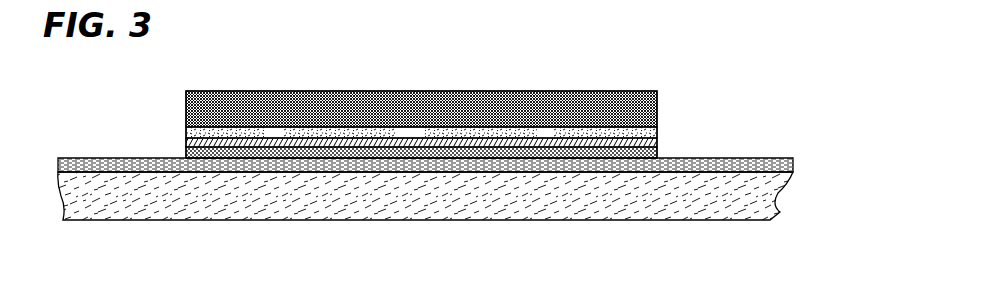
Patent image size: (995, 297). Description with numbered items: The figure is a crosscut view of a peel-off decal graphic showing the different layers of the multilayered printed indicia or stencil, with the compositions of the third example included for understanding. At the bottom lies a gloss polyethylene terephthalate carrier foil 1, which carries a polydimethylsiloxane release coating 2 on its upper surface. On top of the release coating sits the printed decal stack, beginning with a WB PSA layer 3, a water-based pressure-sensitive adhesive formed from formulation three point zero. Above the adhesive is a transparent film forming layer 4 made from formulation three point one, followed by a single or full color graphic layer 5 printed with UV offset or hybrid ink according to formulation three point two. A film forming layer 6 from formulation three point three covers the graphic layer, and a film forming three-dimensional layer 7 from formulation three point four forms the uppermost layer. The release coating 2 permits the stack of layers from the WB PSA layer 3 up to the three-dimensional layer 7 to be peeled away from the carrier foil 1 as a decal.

The gloss polyethylene terephthalate carrier foil 1 is at (776, 195).
The polydimethylsiloxane release coating 2 is at (775, 158).
The WB PSA layer 3 is at (186, 155).
The transparent film forming layer 4 is at (658, 145).
The single/full color graphic layer 5 is at (186, 133).
The film forming layer 6 is at (658, 119).
The film forming 3D layer 7 is at (569, 105).